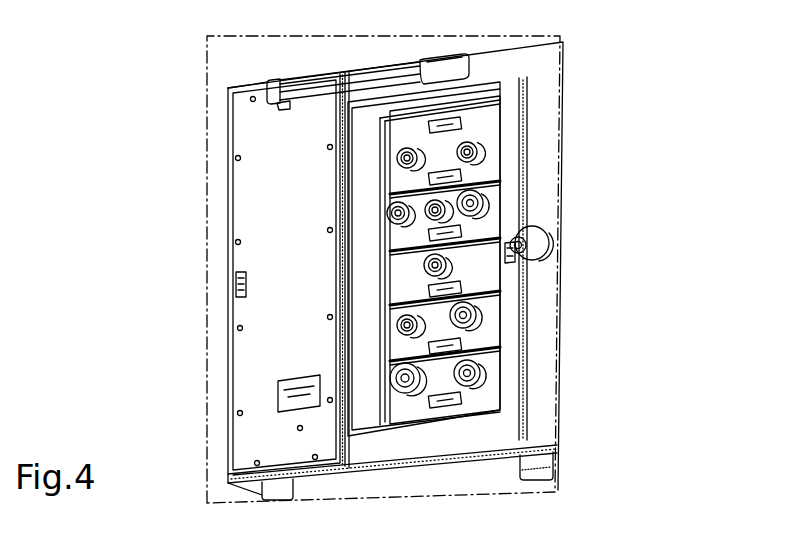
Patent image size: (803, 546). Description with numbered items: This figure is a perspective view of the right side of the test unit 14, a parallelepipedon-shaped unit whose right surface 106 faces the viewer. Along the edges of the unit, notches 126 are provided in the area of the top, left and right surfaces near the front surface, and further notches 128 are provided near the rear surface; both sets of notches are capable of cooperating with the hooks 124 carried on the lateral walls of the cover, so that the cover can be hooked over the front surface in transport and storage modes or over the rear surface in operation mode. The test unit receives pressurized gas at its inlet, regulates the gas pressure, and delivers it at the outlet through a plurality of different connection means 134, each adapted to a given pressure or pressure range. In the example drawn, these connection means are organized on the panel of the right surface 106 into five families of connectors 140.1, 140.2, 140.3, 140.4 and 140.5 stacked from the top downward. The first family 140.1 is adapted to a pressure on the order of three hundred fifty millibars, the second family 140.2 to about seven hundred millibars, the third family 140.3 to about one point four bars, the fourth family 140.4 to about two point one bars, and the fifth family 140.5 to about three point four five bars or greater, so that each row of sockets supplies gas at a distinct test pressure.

The test unit 14 is at (254, 58).
The right surface 106 is at (352, 259).
The hooks 124 is at (533, 236).
The notches 126 is at (513, 243).
The notches 128 is at (230, 282).
The connection means 134 is at (378, 230).
The first family of connectors 140.1 is at (490, 164).
The second family of connectors 140.2 is at (377, 215).
The third family of connectors 140.3 is at (481, 276).
The fourth family of connectors 140.4 is at (388, 320).
The fifth family of connectors 140.5 is at (380, 380).